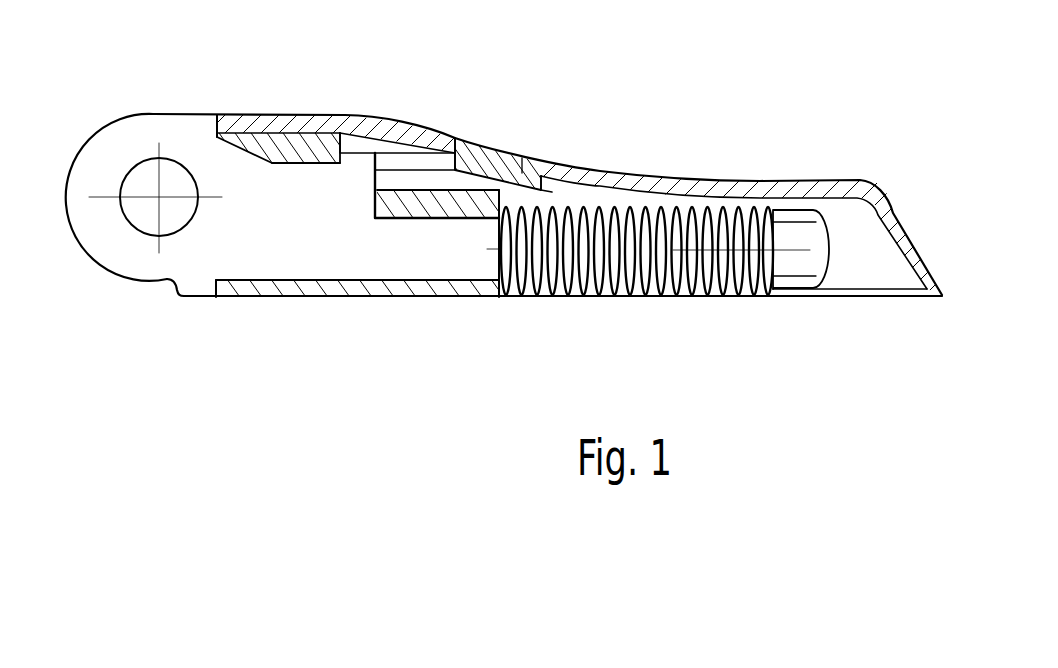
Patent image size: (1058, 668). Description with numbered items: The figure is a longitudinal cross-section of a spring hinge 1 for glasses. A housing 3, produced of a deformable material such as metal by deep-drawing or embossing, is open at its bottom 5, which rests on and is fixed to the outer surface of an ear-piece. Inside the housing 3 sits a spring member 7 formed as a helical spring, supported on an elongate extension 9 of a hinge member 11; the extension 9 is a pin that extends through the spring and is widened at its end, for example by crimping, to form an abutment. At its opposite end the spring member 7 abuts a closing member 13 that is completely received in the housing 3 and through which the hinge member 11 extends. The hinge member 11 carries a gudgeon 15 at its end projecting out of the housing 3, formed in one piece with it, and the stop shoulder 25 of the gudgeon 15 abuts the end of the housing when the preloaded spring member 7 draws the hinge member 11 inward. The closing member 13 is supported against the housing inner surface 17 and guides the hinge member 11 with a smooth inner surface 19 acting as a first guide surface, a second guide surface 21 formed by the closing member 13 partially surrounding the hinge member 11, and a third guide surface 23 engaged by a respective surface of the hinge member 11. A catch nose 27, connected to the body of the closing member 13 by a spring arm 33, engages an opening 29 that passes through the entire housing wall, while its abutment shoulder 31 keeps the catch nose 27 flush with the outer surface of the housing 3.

The spring hinge 1 is at (549, 214).
The housing 3 is at (735, 183).
The bottom 5 is at (795, 300).
The spring member 7 is at (532, 297).
The extension 9 is at (799, 237).
The hinge member 11 is at (368, 258).
The closing member 13 is at (291, 150).
The gudgeon 15 is at (116, 164).
The housing inner surface 17 is at (360, 140).
The inner surface 19 is at (284, 275).
The second guide surface 21 is at (421, 228).
The third guide surface 23 is at (314, 166).
The stop shoulder 25 is at (218, 138).
The catch nose 27 is at (497, 157).
The opening 29 is at (549, 190).
The abutment shoulder 31 is at (597, 168).
The spring arm 33 is at (412, 160).